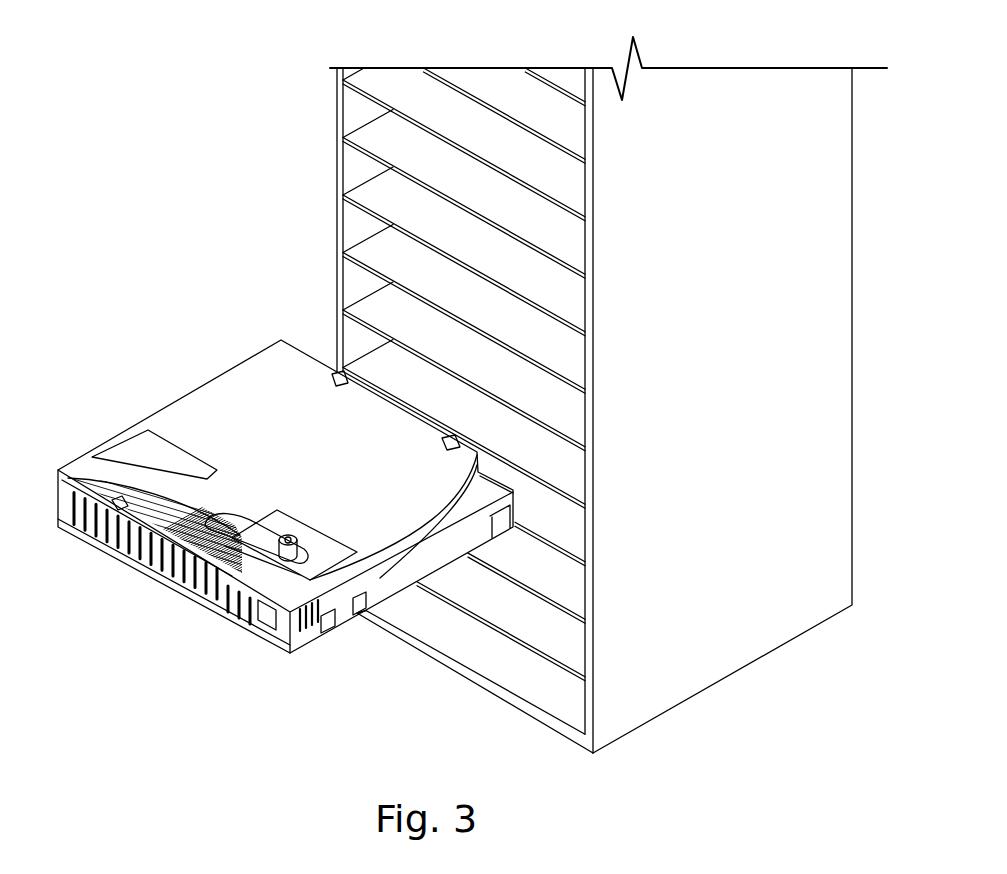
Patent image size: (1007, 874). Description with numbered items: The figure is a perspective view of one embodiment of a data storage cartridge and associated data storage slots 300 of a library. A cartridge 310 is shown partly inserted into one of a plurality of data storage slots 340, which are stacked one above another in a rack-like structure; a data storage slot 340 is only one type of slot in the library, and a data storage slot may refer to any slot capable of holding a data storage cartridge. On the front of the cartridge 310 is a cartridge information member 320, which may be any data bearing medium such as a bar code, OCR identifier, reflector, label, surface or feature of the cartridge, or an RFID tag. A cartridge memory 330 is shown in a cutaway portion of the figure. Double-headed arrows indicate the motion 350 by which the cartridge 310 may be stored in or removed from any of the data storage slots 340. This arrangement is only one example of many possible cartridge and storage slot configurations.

The data storage cartridge and associated data storage slots 300 is at (276, 522).
The cartridge 310 is at (110, 440).
The cartridge information member 320 is at (120, 545).
The cartridge memory 330 is at (250, 552).
The data storage slot 340 is at (337, 207).
The motion 350 is at (517, 411).